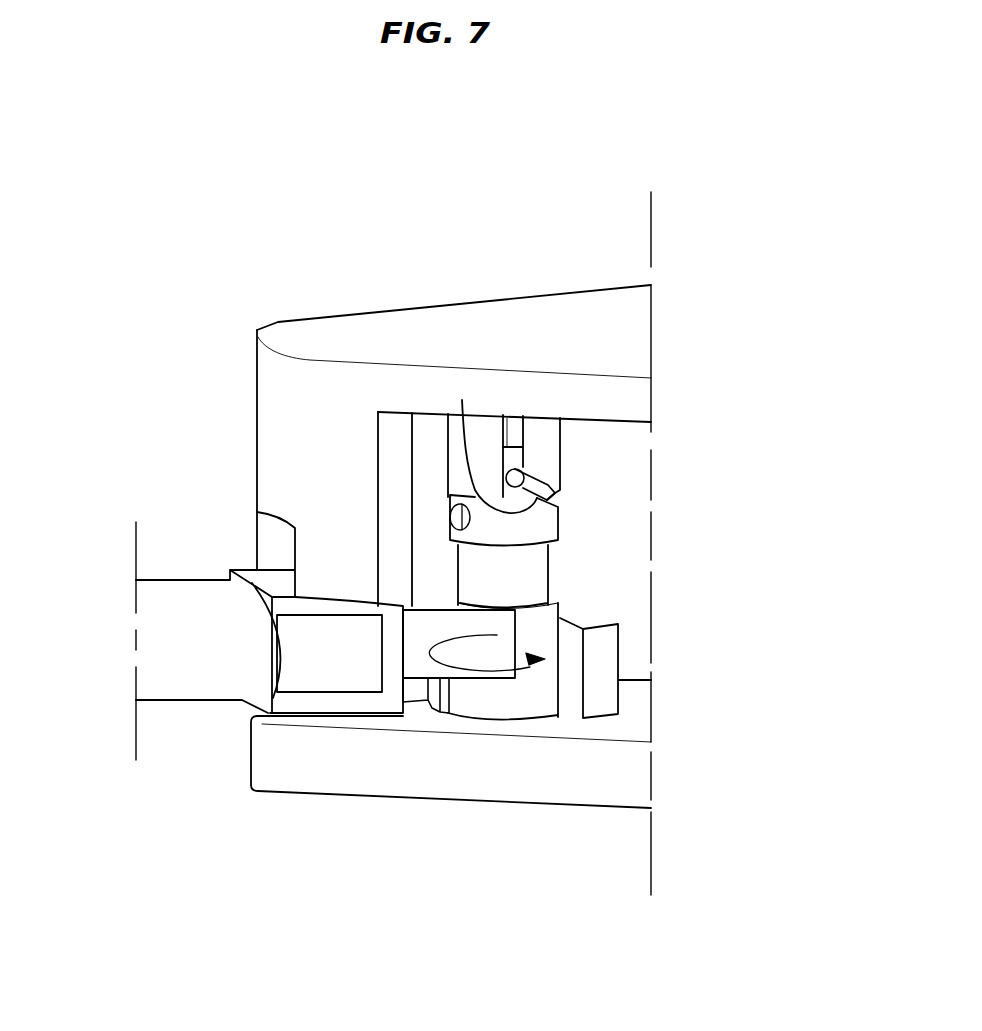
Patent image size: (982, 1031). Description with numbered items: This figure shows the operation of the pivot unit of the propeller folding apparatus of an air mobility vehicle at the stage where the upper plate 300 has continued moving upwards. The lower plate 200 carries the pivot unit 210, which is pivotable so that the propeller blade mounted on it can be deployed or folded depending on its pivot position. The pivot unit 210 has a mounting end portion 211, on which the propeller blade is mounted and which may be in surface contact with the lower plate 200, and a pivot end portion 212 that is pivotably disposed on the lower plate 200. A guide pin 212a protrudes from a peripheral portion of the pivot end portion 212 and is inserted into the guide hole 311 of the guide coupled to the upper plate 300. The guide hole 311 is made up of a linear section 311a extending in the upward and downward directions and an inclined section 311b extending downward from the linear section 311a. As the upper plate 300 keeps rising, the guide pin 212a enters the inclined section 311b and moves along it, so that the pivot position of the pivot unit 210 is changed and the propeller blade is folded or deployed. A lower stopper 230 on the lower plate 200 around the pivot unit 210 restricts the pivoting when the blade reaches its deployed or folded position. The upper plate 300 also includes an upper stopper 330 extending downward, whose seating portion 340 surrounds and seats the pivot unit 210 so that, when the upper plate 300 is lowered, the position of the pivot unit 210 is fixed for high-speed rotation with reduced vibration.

The lower plate 200 is at (618, 773).
The pivot unit 210 is at (460, 762).
The mounting end portion 211 is at (418, 632).
The pivot end portion 212 is at (488, 572).
The guide pin 212a is at (560, 484).
The lower stopper 230 is at (603, 655).
The upper plate 300 is at (612, 343).
The guide hole 311 is at (458, 303).
The linear section 311a is at (512, 430).
The inclined section 311b is at (462, 400).
The upper stopper 330 is at (283, 450).
The seating portion 340 is at (252, 538).